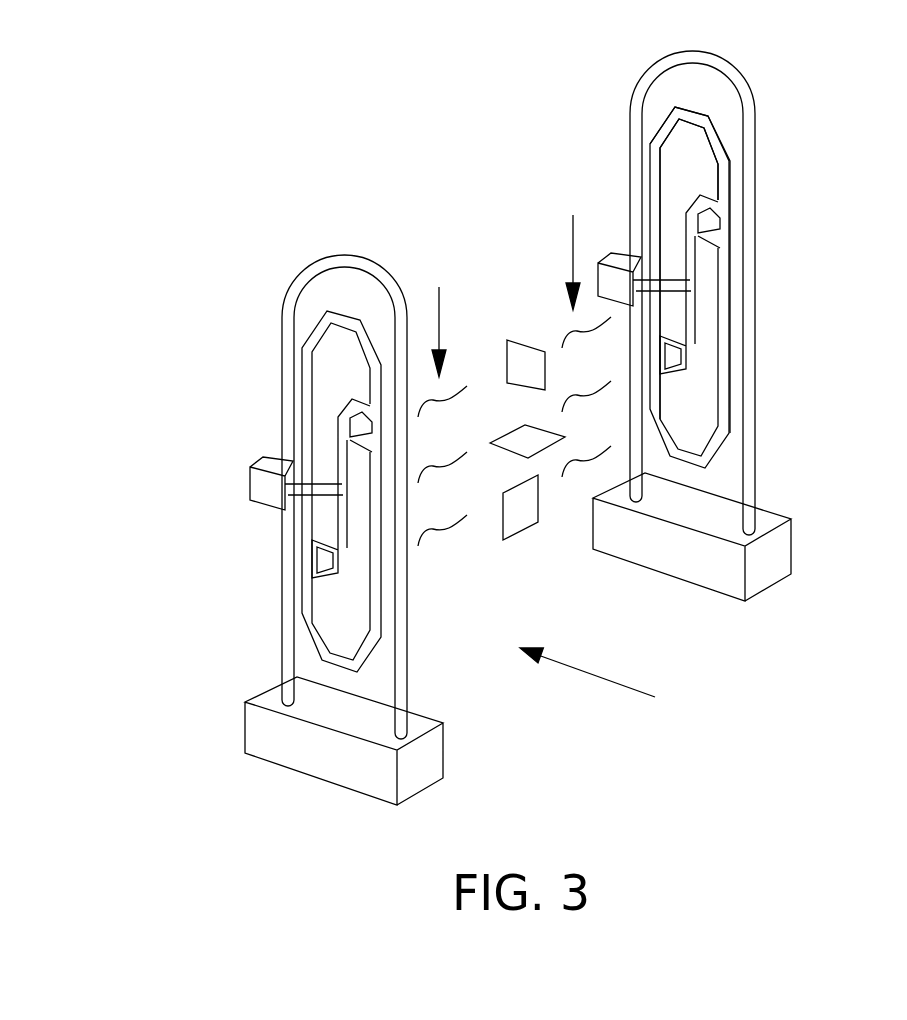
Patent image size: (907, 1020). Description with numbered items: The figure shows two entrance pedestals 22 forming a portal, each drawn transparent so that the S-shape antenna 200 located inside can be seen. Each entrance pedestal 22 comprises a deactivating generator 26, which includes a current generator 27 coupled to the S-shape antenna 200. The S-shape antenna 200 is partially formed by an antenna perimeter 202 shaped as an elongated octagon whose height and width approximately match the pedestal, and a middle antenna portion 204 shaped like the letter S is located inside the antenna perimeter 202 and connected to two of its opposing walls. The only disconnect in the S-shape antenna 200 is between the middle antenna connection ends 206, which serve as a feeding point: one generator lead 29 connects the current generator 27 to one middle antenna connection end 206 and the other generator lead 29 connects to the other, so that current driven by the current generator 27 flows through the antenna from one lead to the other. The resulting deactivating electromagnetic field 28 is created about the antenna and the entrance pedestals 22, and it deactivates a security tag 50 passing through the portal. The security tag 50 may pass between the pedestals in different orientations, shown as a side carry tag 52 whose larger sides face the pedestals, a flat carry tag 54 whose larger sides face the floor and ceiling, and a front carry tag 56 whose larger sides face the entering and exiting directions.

The entrance pedestal 22 is at (297, 270).
The deactivating generator 26 is at (501, 335).
The current generator 27 is at (248, 482).
The deactivating electromagnetic field 28 is at (536, 438).
The generator lead 29 is at (313, 462).
The security tag 50 is at (566, 379).
The side carry tag 52 is at (530, 340).
The flat carry tag 54 is at (547, 448).
The front carry tag 56 is at (517, 540).
The S-shape antenna 200 is at (352, 410).
The antenna perimeter 202 is at (723, 378).
The middle antenna portion 204 is at (697, 315).
The middle antenna connection end 206 is at (300, 452).